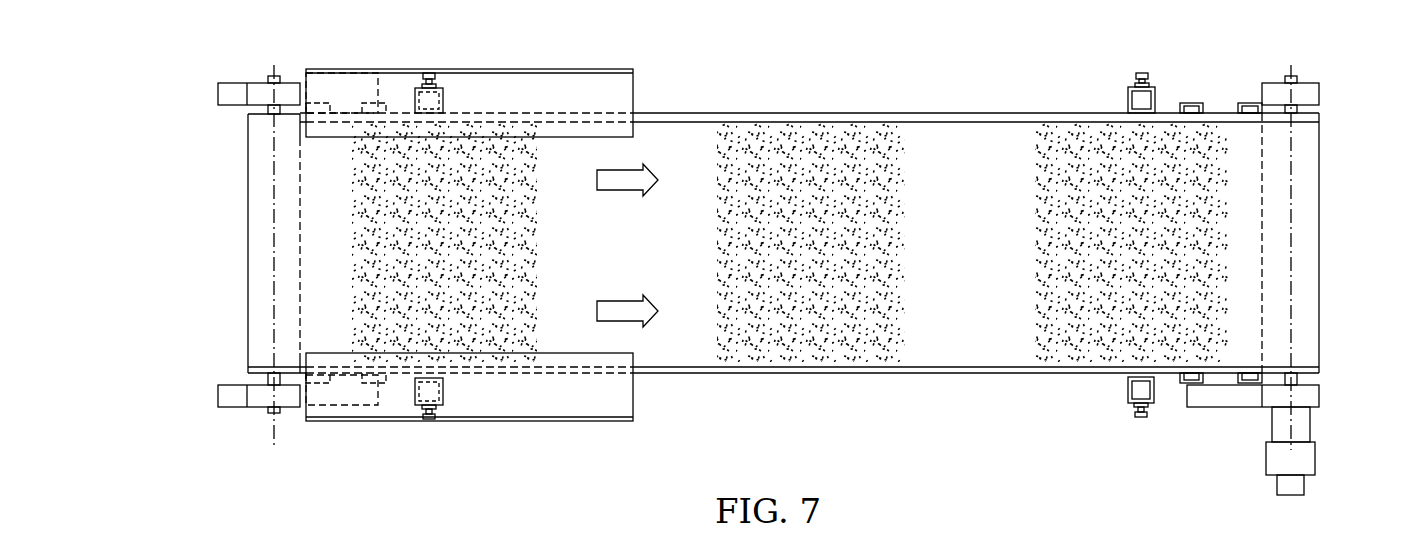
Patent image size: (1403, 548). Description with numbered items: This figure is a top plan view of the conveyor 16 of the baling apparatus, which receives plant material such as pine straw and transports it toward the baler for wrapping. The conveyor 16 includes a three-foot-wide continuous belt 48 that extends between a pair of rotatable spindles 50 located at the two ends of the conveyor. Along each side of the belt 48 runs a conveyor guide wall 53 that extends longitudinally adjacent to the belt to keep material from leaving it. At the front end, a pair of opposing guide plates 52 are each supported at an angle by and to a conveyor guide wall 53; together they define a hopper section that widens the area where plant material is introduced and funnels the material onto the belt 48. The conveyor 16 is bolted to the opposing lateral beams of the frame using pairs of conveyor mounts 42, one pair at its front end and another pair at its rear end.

The conveyor 16 is at (970, 66).
The conveyor mounts 42 is at (413, 390).
The continuous belt 48 is at (978, 261).
The rotatable spindles 50 is at (248, 247).
The guide plates 52 is at (627, 103).
The conveyor guide wall 53 is at (813, 112).